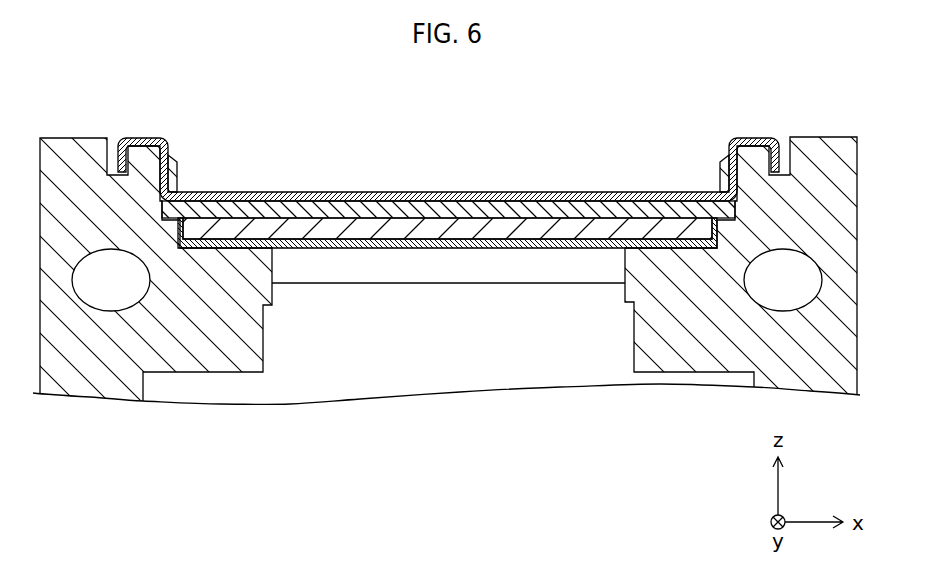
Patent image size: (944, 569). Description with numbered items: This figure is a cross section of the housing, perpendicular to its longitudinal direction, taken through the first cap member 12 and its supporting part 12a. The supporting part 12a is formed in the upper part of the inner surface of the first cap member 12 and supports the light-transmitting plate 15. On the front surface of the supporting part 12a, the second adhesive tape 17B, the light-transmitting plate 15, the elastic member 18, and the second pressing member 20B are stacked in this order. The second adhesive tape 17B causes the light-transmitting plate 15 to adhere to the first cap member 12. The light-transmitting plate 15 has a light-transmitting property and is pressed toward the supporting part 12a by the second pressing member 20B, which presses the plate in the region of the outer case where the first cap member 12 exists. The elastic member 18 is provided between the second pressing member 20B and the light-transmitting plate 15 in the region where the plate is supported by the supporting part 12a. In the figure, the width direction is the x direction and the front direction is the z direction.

The first cap member 12 is at (79, 153).
The supporting part 12a is at (210, 243).
The light-transmitting plate 15 is at (490, 232).
The second adhesive tape 17B is at (333, 235).
The elastic member 18 is at (592, 210).
The second pressing member 20B is at (412, 197).